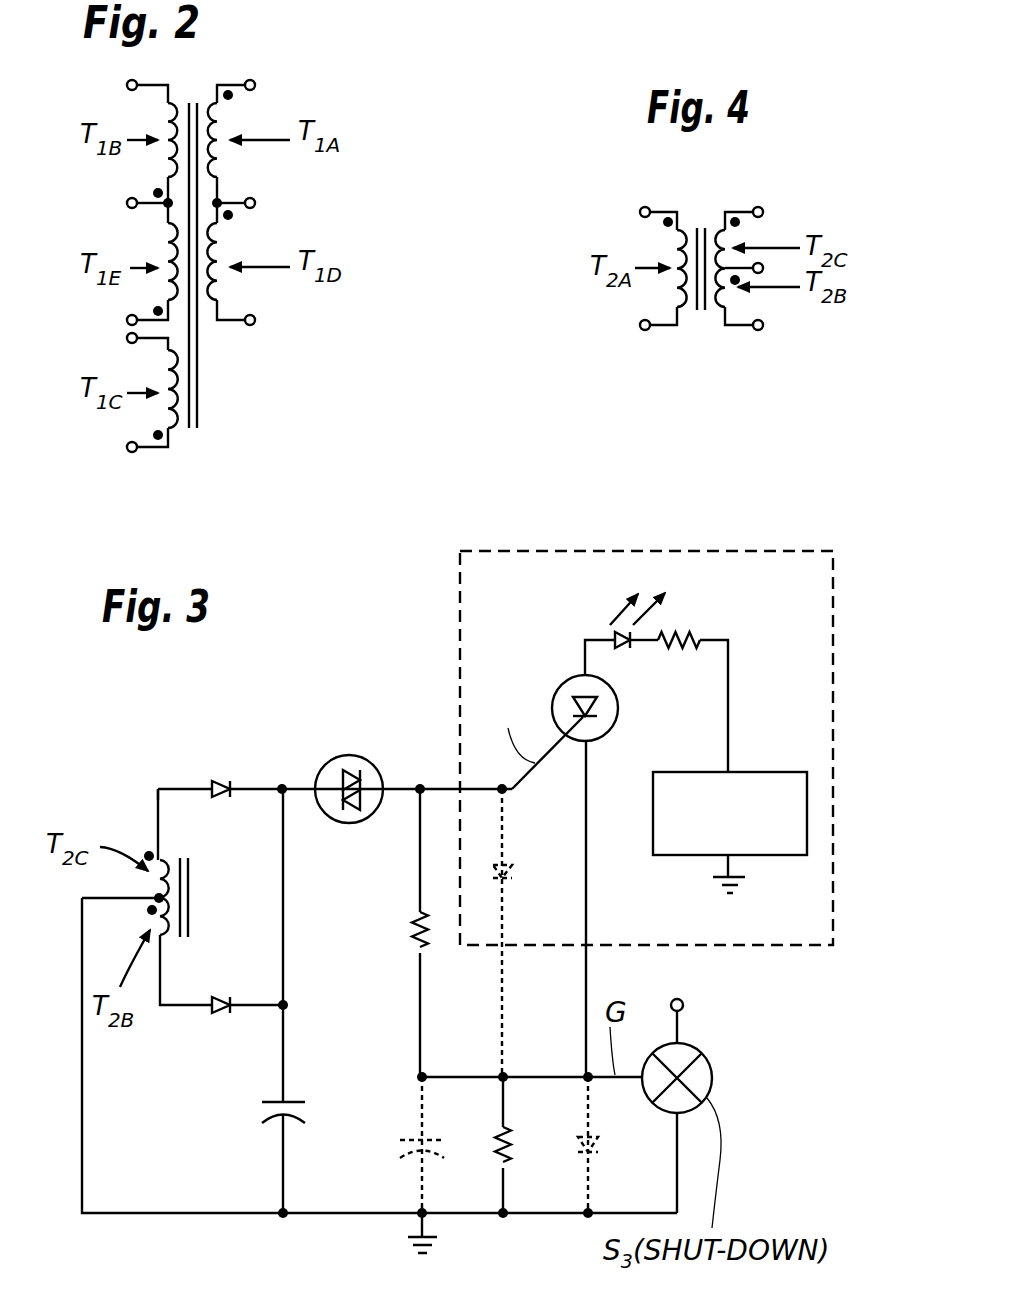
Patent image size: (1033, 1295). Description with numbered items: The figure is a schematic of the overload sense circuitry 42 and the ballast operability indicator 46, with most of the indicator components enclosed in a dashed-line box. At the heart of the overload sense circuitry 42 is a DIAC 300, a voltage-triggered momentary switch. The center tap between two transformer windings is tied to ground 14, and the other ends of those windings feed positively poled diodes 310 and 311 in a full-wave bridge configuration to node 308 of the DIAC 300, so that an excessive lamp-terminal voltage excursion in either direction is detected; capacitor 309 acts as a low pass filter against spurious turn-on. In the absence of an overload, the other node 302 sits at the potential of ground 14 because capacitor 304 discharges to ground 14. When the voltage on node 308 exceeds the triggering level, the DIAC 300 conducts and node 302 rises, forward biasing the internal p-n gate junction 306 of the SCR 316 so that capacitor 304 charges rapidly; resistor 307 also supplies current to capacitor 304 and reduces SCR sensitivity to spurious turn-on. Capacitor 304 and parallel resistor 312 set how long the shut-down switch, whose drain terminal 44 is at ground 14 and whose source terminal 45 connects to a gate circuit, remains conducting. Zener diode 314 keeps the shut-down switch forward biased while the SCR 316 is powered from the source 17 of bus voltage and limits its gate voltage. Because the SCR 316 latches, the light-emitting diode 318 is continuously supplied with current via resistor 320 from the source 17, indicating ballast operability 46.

The ground 14 is at (417, 1223).
The source of bus voltage 17 is at (750, 772).
The overload sense circuitry 42 is at (221, 718).
The drain terminal 44 is at (677, 1162).
The source terminal 45 is at (678, 1030).
The ballast operability indicator 46 is at (642, 542).
The DIAC 300 is at (346, 752).
The node 302 is at (399, 786).
The capacitor 304 is at (402, 1140).
The internal p-n gate junction 306 is at (533, 843).
The resistor 307 is at (413, 937).
The node 308 is at (293, 786).
The capacitor 309 is at (303, 1102).
The diode 310 is at (210, 782).
The diode 311 is at (220, 996).
The resistor 312 is at (493, 1138).
The Zener diode 314 is at (583, 1138).
The SCR 316 is at (553, 690).
The light-emitting diode 318 is at (637, 648).
The resistor 320 is at (693, 628).